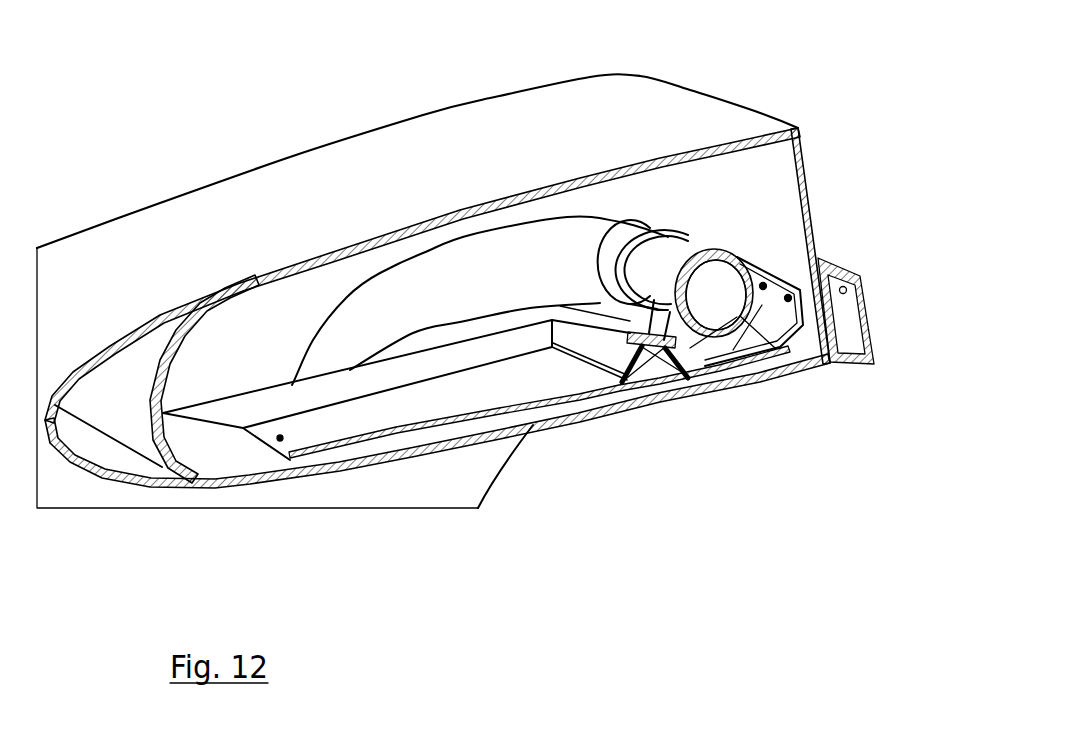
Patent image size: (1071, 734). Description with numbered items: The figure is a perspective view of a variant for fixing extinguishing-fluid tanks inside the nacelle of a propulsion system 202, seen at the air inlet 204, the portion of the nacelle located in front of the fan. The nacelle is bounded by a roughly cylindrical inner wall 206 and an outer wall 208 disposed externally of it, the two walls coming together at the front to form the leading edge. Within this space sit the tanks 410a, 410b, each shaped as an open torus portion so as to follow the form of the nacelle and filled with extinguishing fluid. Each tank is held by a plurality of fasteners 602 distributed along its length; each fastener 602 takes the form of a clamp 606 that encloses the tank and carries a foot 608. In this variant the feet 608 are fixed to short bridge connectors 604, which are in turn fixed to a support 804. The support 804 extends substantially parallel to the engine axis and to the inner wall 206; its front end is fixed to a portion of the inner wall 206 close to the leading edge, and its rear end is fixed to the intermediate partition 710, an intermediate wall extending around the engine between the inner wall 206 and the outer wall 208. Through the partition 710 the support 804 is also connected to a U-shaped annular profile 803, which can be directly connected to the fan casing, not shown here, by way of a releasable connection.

The propulsion system 202 is at (133, 155).
The air inlet 204 is at (217, 412).
The inner wall 206 is at (348, 465).
The outer wall 208 is at (300, 213).
The tank 410a is at (503, 253).
The tank 410b is at (723, 310).
The fastener 602 is at (599, 472).
The bridge connector 604 is at (687, 363).
The clamp 606 is at (695, 257).
The foot 608 is at (643, 340).
The intermediate partition 710 is at (810, 185).
The U-shaped annular profile 803 is at (865, 295).
The support 804 is at (397, 417).